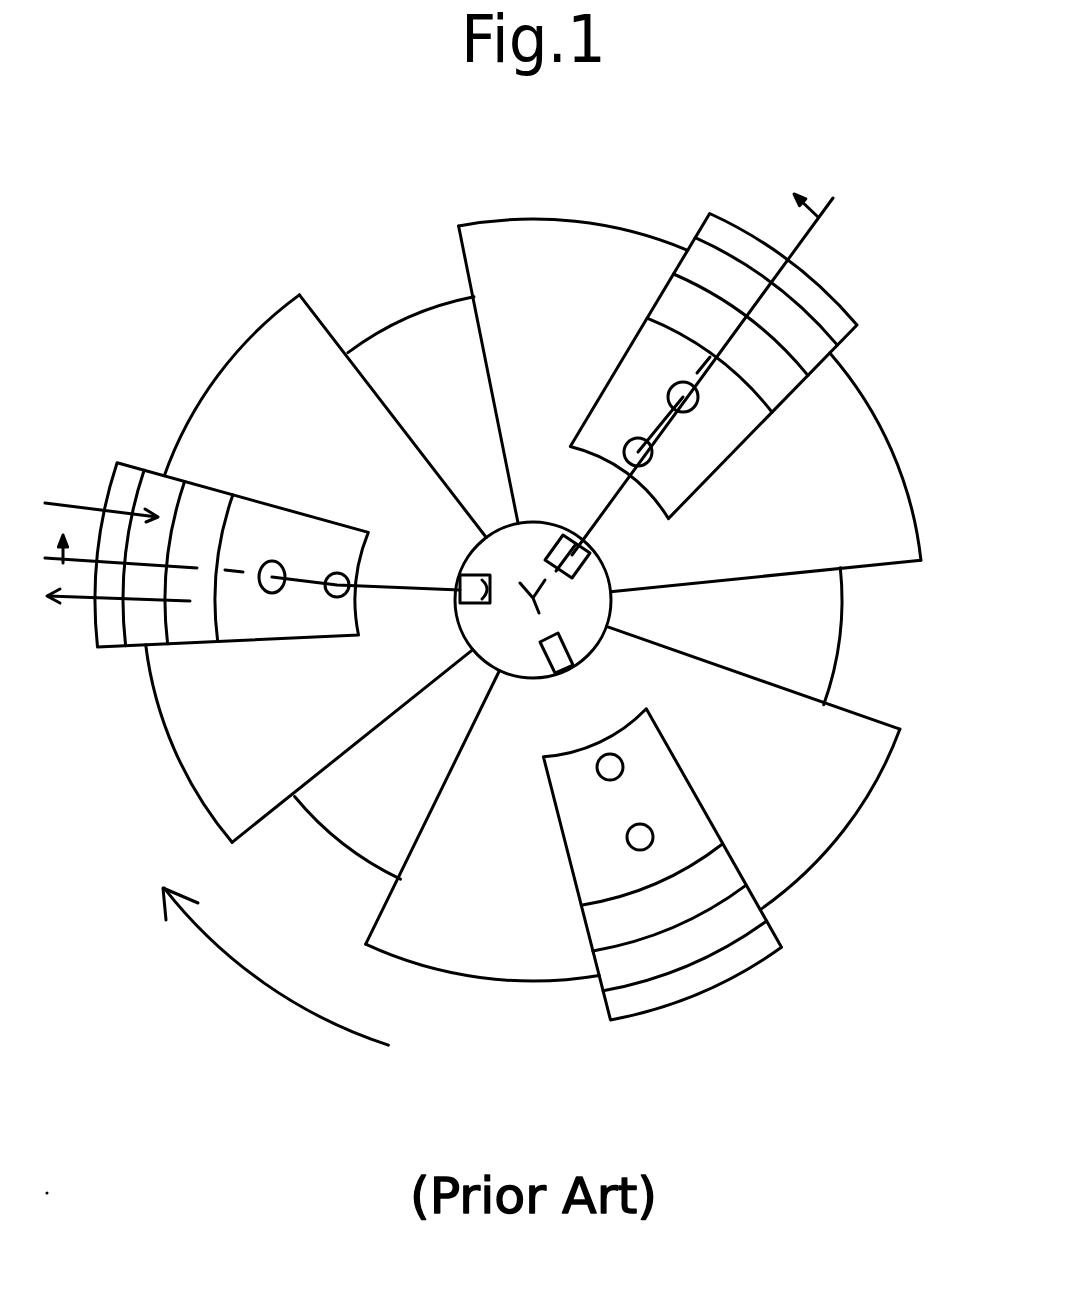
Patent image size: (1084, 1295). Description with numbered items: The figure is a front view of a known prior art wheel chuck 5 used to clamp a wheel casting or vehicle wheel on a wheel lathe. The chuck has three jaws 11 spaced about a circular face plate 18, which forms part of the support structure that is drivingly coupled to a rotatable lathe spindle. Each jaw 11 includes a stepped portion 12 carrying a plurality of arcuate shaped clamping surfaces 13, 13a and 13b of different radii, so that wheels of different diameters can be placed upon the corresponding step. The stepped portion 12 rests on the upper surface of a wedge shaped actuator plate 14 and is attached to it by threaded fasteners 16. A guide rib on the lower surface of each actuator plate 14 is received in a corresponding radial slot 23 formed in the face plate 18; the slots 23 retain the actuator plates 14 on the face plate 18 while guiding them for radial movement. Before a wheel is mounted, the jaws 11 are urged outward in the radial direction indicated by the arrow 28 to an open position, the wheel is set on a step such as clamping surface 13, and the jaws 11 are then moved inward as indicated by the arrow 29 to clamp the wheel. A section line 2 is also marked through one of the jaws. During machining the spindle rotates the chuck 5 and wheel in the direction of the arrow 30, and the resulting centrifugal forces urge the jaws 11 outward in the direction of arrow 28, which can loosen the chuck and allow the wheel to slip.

The prior art wheel chuck 5 is at (318, 202).
The jaw 11 is at (882, 324).
The stepped portion 12 is at (827, 284).
The arcuate shaped clamping surface 13 is at (651, 313).
The arcuate shaped clamping surface 13a is at (628, 350).
The arcuate shaped clamping surface 13b is at (712, 250).
The wedge shaped actuator plate 14 is at (214, 378).
The threaded fastener 16 is at (276, 562).
The circular face plate 18 is at (840, 632).
The radial slot 23 is at (480, 565).
The section line 2- 2 is at (439, 369).
The arrow indicating outward radial direction 28 is at (118, 614).
The arrow indicating inward radial direction 29 is at (101, 501).
The arrow indicating rotation 30 is at (275, 966).